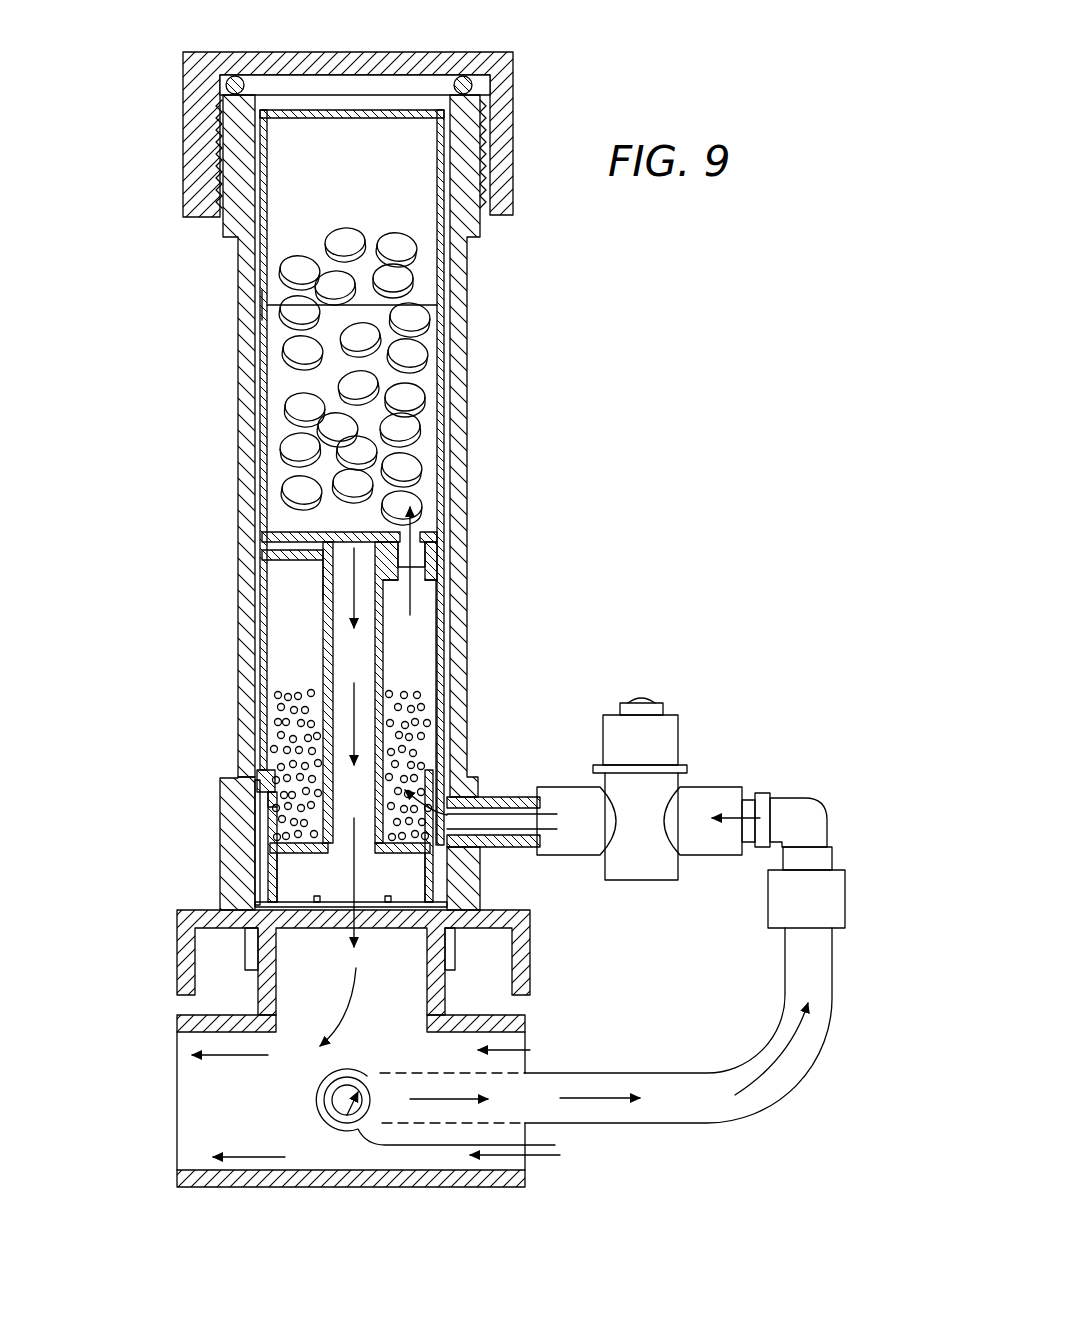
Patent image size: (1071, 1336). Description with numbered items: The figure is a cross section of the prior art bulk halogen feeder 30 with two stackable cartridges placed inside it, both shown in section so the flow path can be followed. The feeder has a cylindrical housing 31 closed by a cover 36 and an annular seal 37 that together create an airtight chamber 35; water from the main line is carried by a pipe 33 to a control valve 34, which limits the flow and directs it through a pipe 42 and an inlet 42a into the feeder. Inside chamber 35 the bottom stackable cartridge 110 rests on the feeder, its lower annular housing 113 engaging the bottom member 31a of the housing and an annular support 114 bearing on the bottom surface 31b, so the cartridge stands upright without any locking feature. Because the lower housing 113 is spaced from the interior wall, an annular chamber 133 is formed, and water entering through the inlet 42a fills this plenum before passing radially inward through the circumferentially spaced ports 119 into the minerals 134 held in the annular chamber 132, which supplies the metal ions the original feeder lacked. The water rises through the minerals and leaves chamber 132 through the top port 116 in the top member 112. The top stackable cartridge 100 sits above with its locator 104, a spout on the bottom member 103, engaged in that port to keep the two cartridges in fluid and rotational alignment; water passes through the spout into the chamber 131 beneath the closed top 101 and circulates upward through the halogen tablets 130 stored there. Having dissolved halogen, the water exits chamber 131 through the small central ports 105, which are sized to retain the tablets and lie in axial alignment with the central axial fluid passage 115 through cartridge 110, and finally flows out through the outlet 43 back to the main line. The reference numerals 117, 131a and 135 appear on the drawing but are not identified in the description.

The bulk halogen feeder 30 is at (548, 75).
The cylindrical housing 31 is at (468, 410).
The bottom member 31a is at (258, 873).
The bottom surface 31b is at (257, 882).
The pipe 33 is at (652, 1073).
The control valve 34 is at (668, 710).
The chamber 35 is at (317, 82).
The cover 36 is at (192, 147).
The annular seal 37 is at (228, 80).
The pipe 42 is at (452, 812).
The inlet 42a is at (490, 797).
The outlet 43 is at (183, 917).
The top stackable cartridge 100 is at (445, 298).
The closed top 101 is at (390, 115).
The bottom member 103 is at (305, 553).
The locator 104 is at (430, 542).
The ports 105 is at (337, 537).
The bottom stackable cartridge 110 is at (442, 653).
The top member 112 is at (305, 543).
The lower annular housing 113 is at (438, 863).
The annular support 114 is at (387, 918).
The central axial fluid passage 115 is at (335, 580).
The top port 116 is at (437, 588).
The connecting wall 117 is at (273, 796).
The ports 119 is at (277, 801).
The halogen tablets 130 is at (298, 445).
The chamber 131 is at (368, 173).
The fill level line 131a is at (262, 298).
The annular chamber 132 is at (322, 650).
The annular chamber 133 is at (262, 838).
The minerals 134 is at (278, 732).
The chamber bottom wall 135 is at (425, 893).